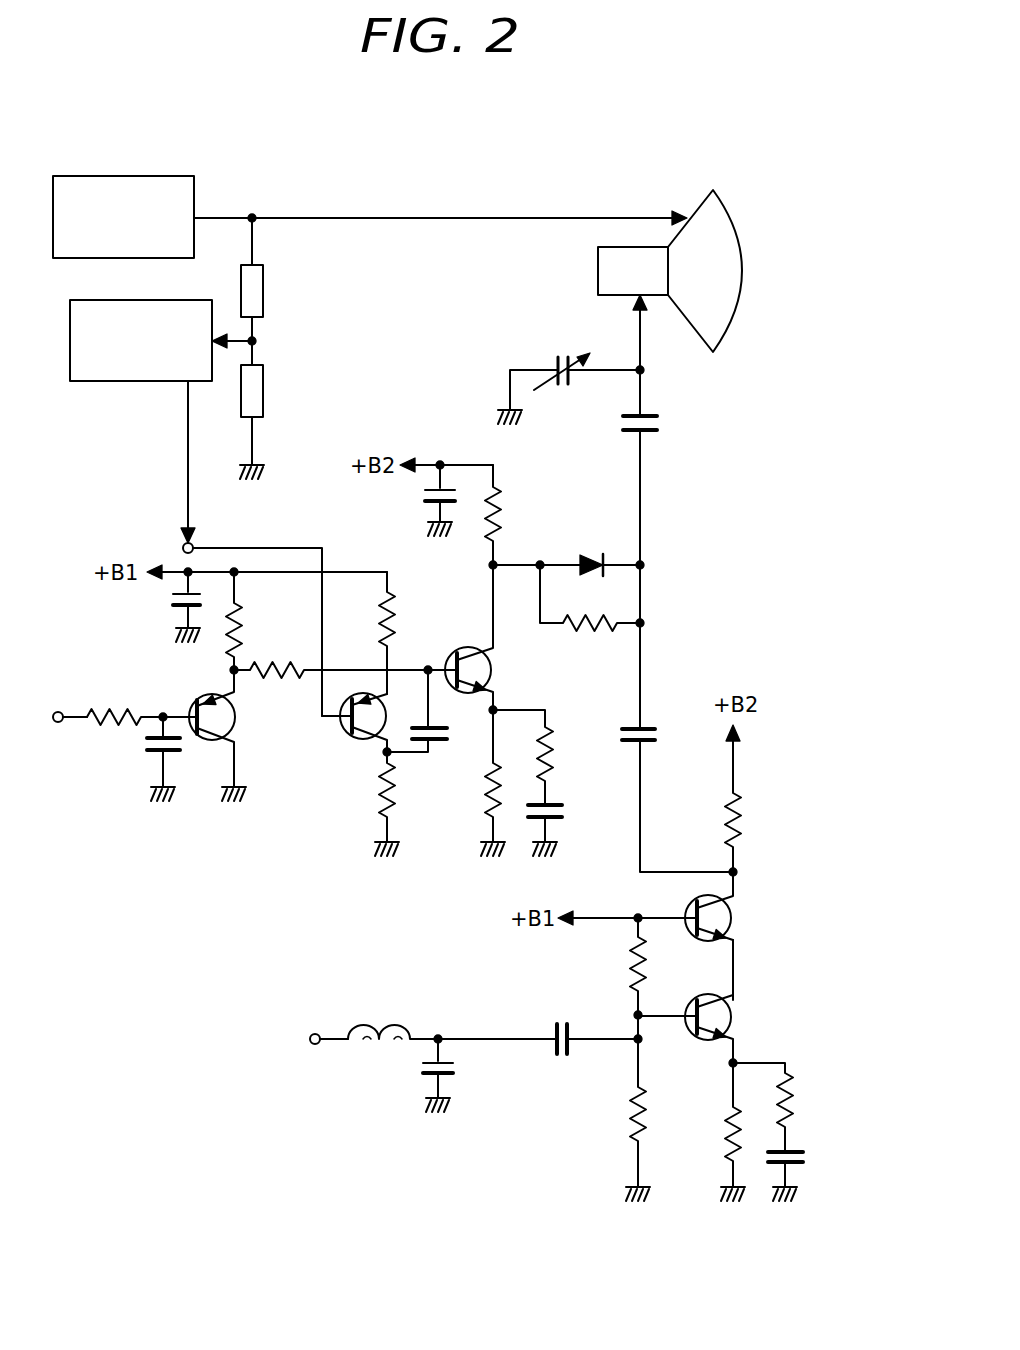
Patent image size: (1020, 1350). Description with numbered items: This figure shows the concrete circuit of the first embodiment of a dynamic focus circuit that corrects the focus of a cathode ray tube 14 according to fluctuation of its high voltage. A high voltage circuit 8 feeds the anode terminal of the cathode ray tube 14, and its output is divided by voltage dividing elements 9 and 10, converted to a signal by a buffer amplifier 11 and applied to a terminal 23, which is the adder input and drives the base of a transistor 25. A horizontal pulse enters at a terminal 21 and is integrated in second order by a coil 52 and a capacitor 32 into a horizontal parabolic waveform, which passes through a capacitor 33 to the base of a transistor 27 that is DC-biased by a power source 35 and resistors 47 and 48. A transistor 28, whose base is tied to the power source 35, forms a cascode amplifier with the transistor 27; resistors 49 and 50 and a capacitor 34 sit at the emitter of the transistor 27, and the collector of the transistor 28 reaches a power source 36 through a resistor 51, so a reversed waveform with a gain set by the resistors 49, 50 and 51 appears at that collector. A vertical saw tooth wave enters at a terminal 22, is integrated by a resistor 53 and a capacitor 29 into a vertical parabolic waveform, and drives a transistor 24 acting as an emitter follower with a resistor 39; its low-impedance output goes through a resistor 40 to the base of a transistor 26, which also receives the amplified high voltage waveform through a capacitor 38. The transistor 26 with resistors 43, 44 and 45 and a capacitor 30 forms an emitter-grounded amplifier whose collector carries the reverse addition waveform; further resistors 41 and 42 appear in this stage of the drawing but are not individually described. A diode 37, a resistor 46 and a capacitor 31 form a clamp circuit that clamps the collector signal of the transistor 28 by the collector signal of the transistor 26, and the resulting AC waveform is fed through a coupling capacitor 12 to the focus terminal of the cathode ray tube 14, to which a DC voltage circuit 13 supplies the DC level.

The high voltage circuit 8 is at (196, 198).
The voltage dividing element 9 is at (265, 292).
The voltage dividing element 10 is at (265, 390).
The buffer amplifier 11 is at (103, 383).
The coupling capacitor 12 is at (660, 425).
The DC voltage circuit 13 is at (562, 392).
The cathode ray tube 14 is at (686, 170).
The input terminal 21 is at (315, 1050).
The input terminal 22 is at (58, 724).
The terminal 23 is at (182, 545).
The transistor 24 is at (238, 730).
The transistor 25 is at (386, 708).
The transistor 26 is at (500, 672).
The transistor 27 is at (737, 1018).
The transistor 28 is at (735, 919).
The capacitor 29 is at (146, 758).
The capacitor 30 is at (565, 818).
The capacitor 31 is at (655, 750).
The capacitor 32 is at (460, 1072).
The capacitor 33 is at (572, 1052).
The capacitor 34 is at (808, 1160).
The power source 35 is at (168, 612).
The power source 36 is at (420, 500).
The diode 37 is at (596, 550).
The capacitor 38 is at (450, 736).
The resistor 39 is at (254, 622).
The resistor 40 is at (290, 685).
The resistor 41 is at (368, 803).
The resistor 42 is at (405, 612).
The resistor 43 is at (474, 803).
The resistor 44 is at (560, 765).
The resistor 45 is at (510, 510).
The resistor 46 is at (590, 640).
The resistor 47 is at (622, 968).
The resistor 48 is at (622, 1123).
The resistor 49 is at (720, 1142).
The resistor 50 is at (800, 1106).
The resistor 51 is at (750, 820).
The coil 52 is at (378, 1057).
The resistor 53 is at (101, 702).